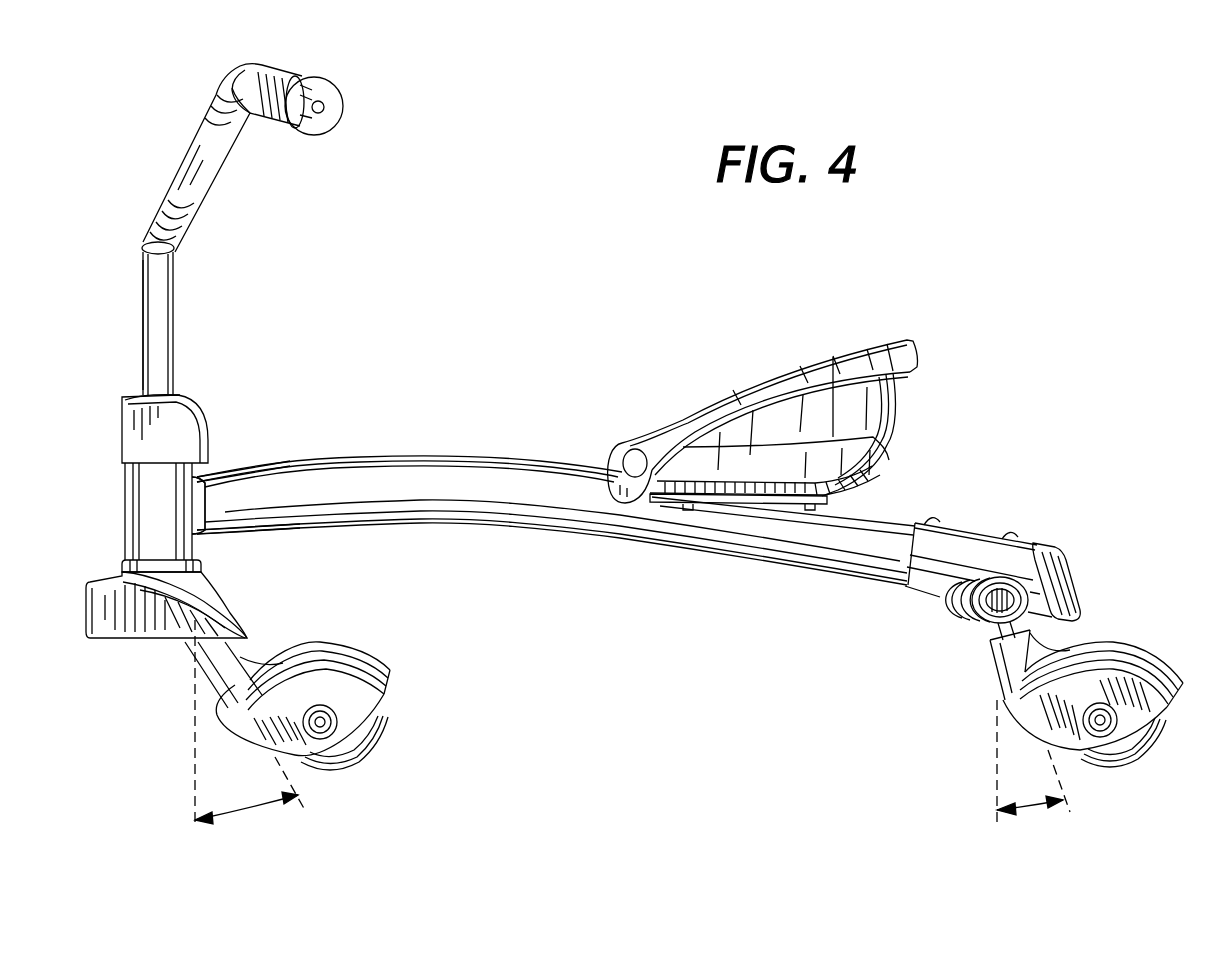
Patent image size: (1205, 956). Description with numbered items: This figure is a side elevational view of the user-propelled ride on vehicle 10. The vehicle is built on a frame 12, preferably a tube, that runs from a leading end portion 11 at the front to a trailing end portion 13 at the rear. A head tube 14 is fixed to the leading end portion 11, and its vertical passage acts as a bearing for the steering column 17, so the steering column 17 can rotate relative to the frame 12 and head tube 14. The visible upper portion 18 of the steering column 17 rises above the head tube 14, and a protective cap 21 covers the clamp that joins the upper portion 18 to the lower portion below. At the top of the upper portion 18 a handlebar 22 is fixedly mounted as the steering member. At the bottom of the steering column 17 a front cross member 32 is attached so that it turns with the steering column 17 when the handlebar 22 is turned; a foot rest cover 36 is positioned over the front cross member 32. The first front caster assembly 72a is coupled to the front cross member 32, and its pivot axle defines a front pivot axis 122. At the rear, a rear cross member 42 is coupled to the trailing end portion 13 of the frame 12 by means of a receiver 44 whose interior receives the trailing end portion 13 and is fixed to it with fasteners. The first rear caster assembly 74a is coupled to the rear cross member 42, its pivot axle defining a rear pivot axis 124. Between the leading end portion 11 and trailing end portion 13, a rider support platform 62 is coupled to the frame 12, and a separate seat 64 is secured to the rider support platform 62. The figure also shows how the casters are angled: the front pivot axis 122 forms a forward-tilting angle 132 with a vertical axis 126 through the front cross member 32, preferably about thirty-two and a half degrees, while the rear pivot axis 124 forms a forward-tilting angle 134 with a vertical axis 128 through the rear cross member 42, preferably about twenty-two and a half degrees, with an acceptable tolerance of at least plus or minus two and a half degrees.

The user-propelled ride on vehicle 10 is at (538, 152).
The leading end portion 11 is at (253, 462).
The frame 12 is at (470, 460).
The trailing end portion 13 is at (884, 523).
The head tube 14 is at (136, 518).
The steering column 17 is at (143, 333).
The upper portion 18 is at (176, 312).
The protective cap 21 is at (192, 410).
The handlebar 22 is at (214, 180).
The front cross member 32 is at (206, 605).
The foot rest cover 36 is at (92, 611).
The rear cross member 42 is at (962, 624).
The receiver 44 is at (984, 536).
The rider support platform 62 is at (688, 505).
The seat 64 is at (903, 340).
The first front caster assembly 72a is at (365, 653).
The first rear caster assembly 74a is at (1142, 650).
The front pivot axis 122 is at (305, 810).
The rear pivot axis 124 is at (1066, 804).
The vertical axis 126 is at (195, 760).
The vertical axis 128 is at (997, 792).
The front forward tilt angle 132 is at (242, 813).
The rear forward tilt angle 134 is at (1032, 806).